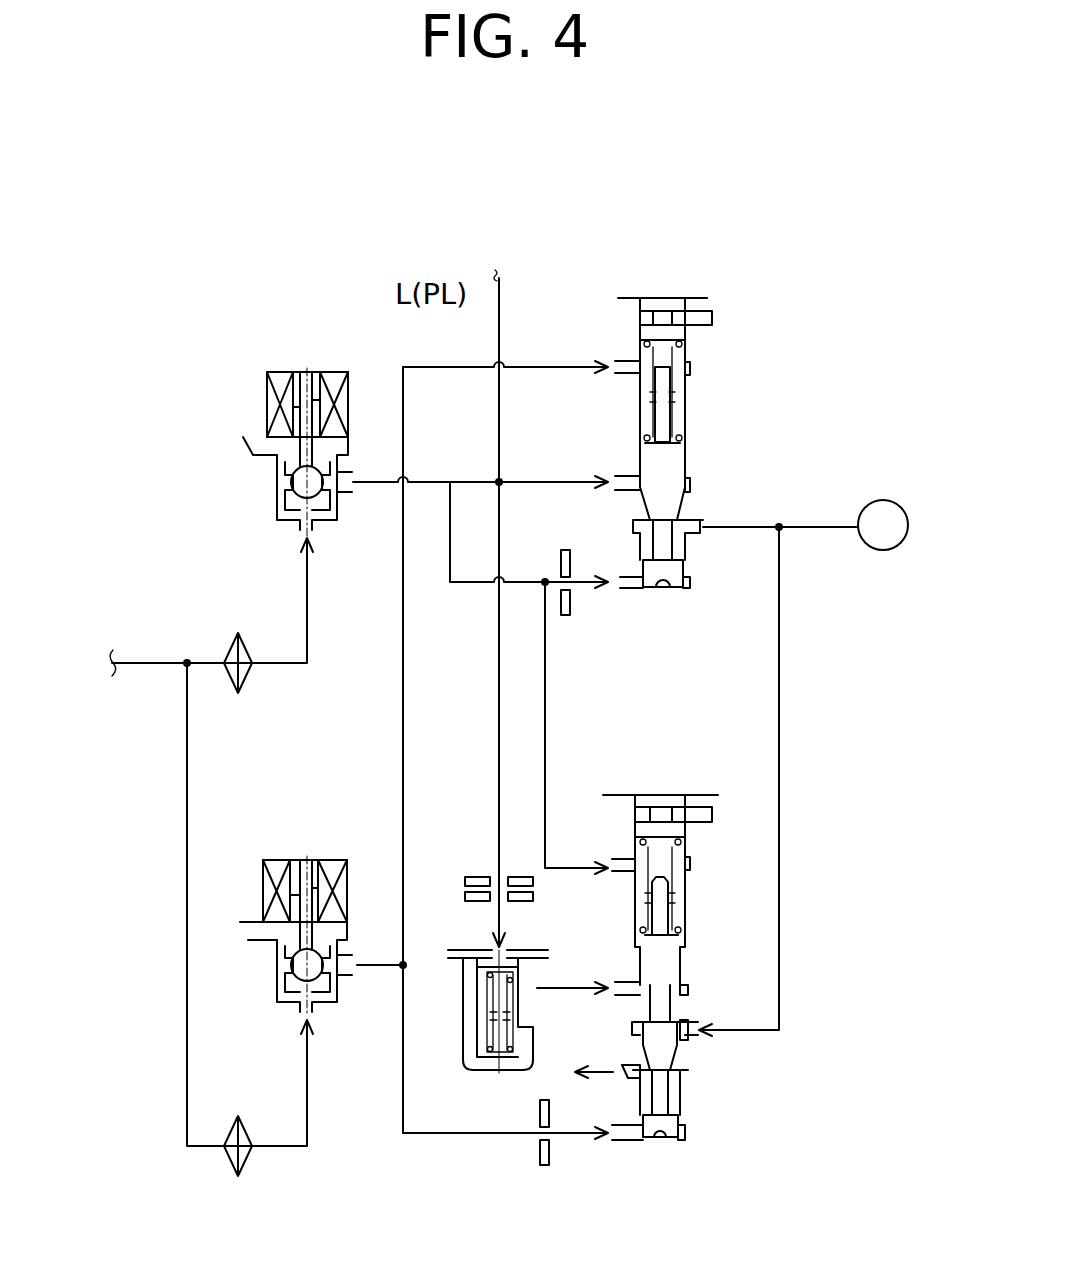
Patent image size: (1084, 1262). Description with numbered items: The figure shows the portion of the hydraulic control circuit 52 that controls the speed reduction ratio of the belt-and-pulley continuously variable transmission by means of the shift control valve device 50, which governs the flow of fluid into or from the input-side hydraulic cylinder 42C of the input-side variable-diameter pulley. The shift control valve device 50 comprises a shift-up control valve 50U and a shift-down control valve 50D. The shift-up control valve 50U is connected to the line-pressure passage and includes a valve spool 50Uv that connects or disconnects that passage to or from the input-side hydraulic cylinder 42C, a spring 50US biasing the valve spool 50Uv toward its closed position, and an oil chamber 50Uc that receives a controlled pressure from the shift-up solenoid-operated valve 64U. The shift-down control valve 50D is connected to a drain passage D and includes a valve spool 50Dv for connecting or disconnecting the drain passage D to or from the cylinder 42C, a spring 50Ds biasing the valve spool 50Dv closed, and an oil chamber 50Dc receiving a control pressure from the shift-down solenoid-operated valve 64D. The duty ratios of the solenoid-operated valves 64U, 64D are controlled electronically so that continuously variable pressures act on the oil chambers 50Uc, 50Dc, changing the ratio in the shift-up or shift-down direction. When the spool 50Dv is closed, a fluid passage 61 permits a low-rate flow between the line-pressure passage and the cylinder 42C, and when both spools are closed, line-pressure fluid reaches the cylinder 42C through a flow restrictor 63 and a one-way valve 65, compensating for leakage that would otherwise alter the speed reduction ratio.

The hydraulic control circuit 52 is at (818, 165).
The shift control valve device 50 is at (726, 250).
The input-side hydraulic cylinder 42C is at (881, 502).
The shift-up solenoid-operated valve 64U is at (264, 348).
The shift-down solenoid-operated valve 64D is at (297, 832).
The shift-up control valve 50U is at (718, 482).
The spring 50US is at (688, 346).
The valve spool 50Uv is at (672, 497).
The oil chamber 50Uc is at (687, 590).
The shift-down control valve 50D is at (694, 965).
The spring 50Ds is at (688, 845).
The valve spool 50Dv is at (668, 1050).
The oil chamber 50Dc is at (675, 1140).
The fluid passage 61 is at (688, 1014).
The flow restrictor 63 is at (478, 874).
The one-way valve 65 is at (470, 1002).
The drain passage D is at (612, 1070).